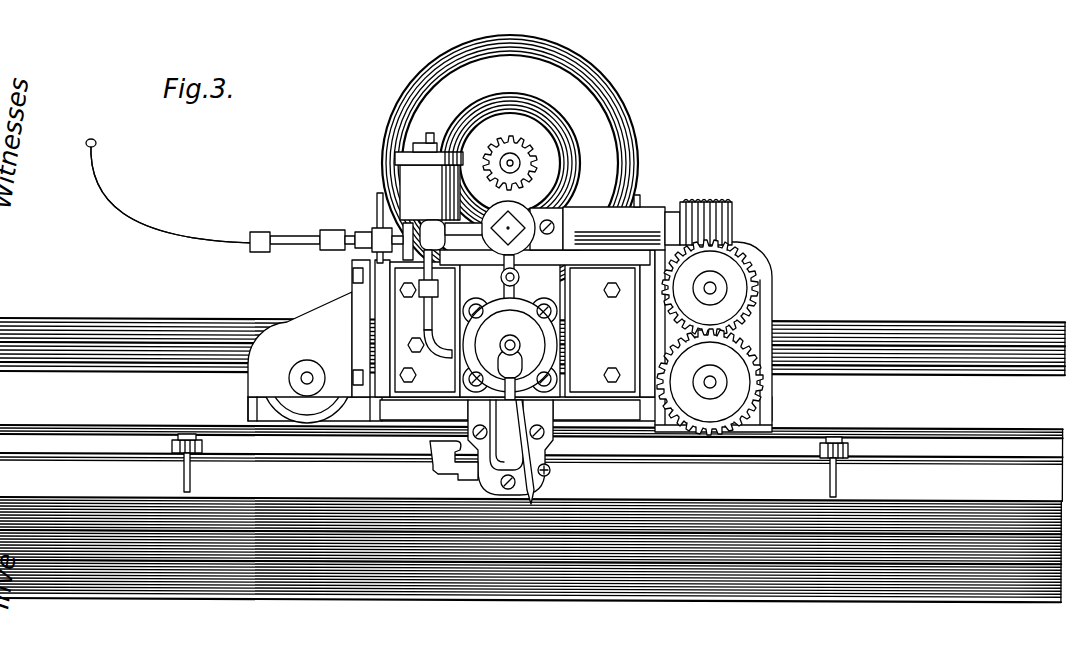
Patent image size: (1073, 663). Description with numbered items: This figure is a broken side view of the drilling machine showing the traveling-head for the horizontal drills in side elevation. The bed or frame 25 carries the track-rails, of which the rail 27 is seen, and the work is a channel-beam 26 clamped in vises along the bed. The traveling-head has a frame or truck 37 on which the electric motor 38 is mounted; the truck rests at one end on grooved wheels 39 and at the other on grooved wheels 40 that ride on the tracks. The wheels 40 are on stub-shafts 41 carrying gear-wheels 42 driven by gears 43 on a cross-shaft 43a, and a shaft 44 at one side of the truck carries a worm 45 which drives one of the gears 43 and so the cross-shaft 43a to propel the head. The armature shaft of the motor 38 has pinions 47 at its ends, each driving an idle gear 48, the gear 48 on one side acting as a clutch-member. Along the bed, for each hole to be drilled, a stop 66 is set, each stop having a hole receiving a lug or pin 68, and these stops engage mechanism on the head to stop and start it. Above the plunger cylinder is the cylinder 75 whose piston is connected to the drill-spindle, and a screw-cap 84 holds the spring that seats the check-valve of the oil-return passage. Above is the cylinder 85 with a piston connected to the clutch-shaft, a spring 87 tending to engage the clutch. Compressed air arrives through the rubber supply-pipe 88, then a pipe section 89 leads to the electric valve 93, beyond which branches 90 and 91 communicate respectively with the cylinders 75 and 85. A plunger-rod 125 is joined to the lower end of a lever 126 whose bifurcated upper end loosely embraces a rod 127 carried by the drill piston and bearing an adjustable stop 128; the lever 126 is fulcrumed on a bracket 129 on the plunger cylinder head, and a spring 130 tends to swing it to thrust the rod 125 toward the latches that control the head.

The bed or frame 25 is at (530, 576).
The channel-beam 26 is at (930, 315).
The rail 27 is at (957, 433).
The frame or truck 37 is at (323, 318).
The electric motor 38 is at (607, 98).
The grooved wheels 39 is at (318, 418).
The grooved wheels 40 is at (508, 160).
The stub-shafts 41 is at (716, 380).
The gear-wheels 42 is at (753, 422).
The gears 43 is at (735, 272).
The cross-shaft 43a is at (716, 288).
The shaft 44 is at (681, 222).
The worm 45 is at (728, 218).
The pinions 47 is at (527, 155).
The idle gear 48 is at (530, 200).
The stop 66 is at (184, 446).
The lug or pin 68 is at (183, 475).
The cylinder 75 is at (552, 326).
The screw-cap 84 is at (425, 329).
The cylinder 85 is at (496, 250).
The spring 87 is at (521, 276).
The compressed-air supply-pipe 88 is at (173, 229).
The pipe section 89 is at (393, 239).
The branch 90 is at (440, 358).
The branch 91 is at (446, 227).
The electric valve 93 is at (408, 184).
The plunger-rod 125 is at (510, 441).
The lever 126 is at (518, 368).
The rod 127 is at (521, 345).
The adjustable stop 128 is at (510, 345).
The bracket 129 is at (550, 415).
The spring 130 is at (550, 472).